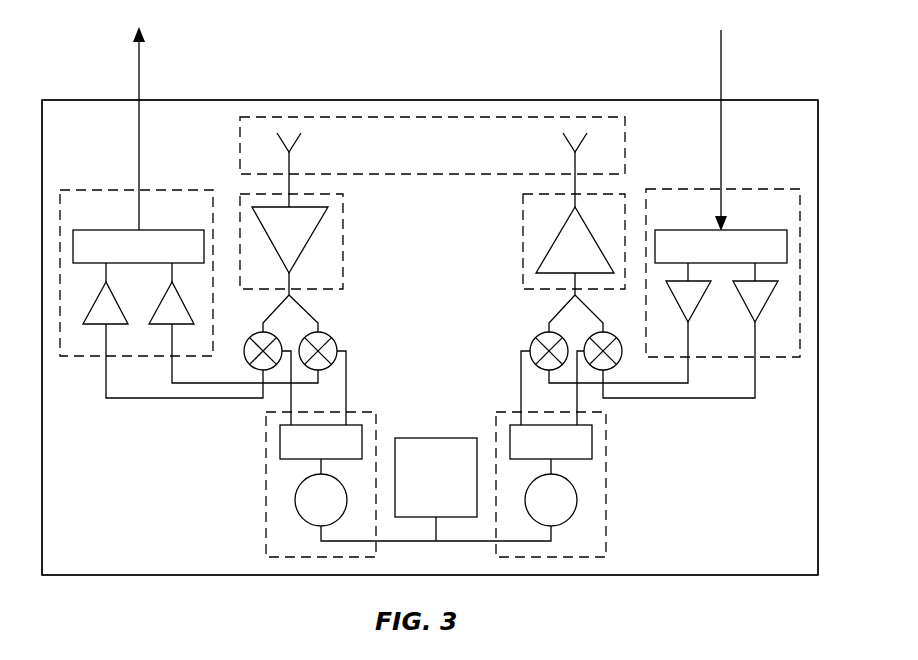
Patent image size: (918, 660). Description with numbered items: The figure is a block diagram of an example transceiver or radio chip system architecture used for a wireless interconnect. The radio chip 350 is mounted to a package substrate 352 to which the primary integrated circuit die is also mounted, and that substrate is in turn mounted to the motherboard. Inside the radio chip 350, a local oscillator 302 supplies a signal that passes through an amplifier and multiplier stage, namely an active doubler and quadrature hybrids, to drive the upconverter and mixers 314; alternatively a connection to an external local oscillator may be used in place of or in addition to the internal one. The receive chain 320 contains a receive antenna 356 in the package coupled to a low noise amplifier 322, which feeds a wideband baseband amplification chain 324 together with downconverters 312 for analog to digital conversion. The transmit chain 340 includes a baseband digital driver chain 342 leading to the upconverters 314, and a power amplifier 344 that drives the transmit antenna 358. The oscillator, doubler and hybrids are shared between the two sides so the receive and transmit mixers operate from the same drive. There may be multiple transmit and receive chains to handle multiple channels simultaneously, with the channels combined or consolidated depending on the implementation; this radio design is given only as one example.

The local oscillator 302 is at (436, 438).
The downconverters 312 is at (256, 334).
The upconverters 314 is at (545, 334).
The receive chain 320 is at (133, 462).
The low noise amplifier 322 is at (313, 232).
The baseband amplification chain 324 is at (97, 326).
The transmit chain 340 is at (755, 443).
The baseband digital driver chain 342 is at (765, 305).
The power amplifier 344 is at (553, 243).
The radio chip 350 is at (647, 100).
The package substrate 352 is at (818, 71).
The receive antenna 356 is at (310, 168).
The transmit antenna 358 is at (575, 168).